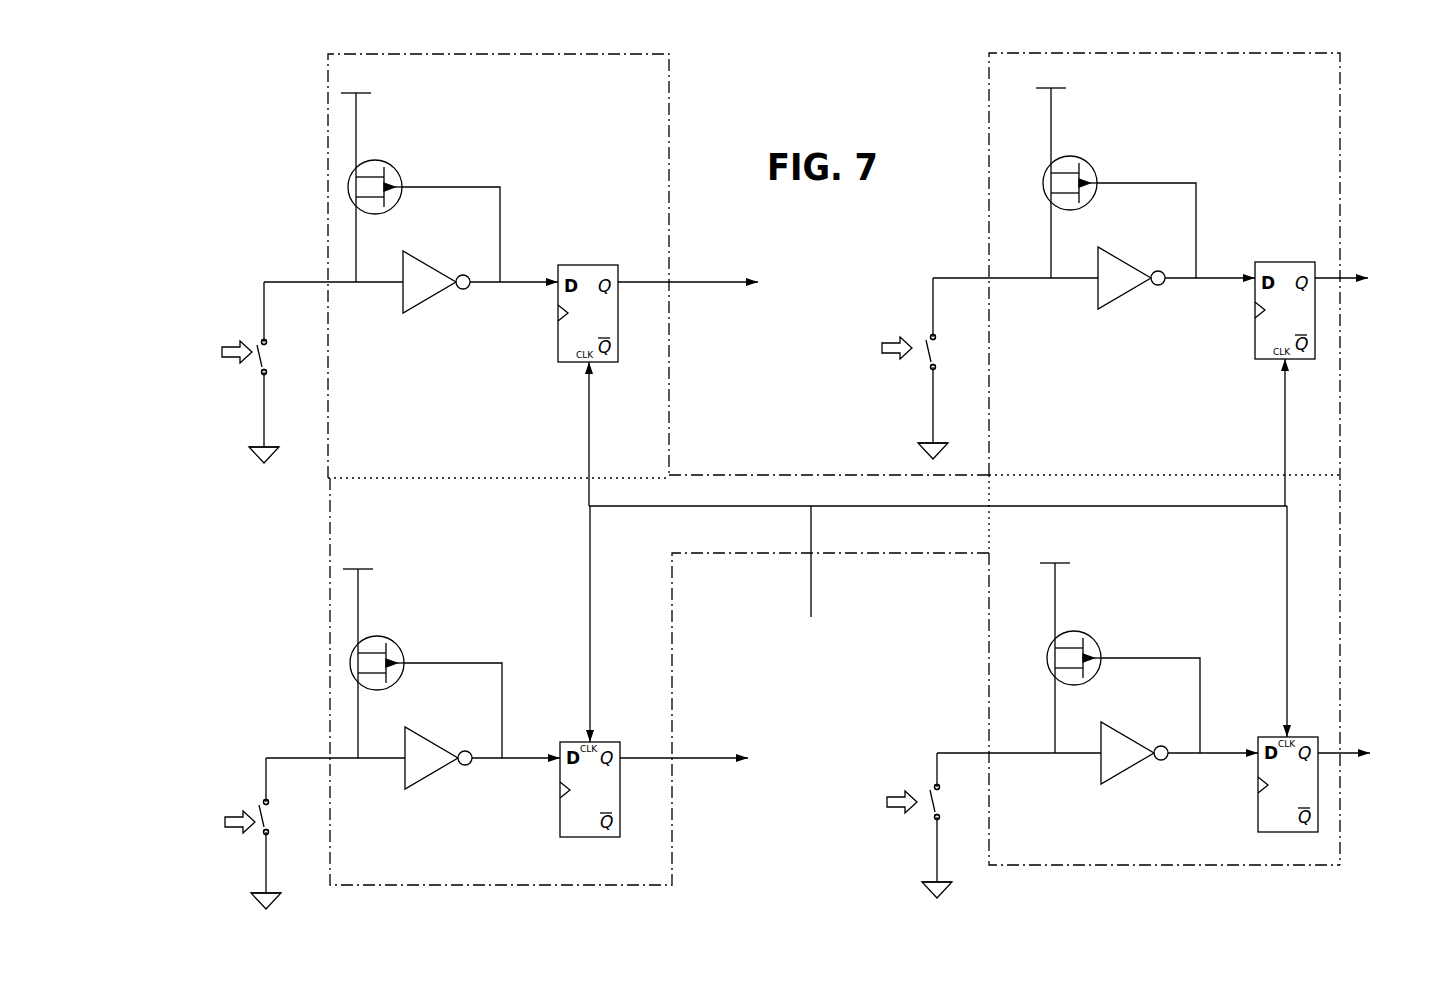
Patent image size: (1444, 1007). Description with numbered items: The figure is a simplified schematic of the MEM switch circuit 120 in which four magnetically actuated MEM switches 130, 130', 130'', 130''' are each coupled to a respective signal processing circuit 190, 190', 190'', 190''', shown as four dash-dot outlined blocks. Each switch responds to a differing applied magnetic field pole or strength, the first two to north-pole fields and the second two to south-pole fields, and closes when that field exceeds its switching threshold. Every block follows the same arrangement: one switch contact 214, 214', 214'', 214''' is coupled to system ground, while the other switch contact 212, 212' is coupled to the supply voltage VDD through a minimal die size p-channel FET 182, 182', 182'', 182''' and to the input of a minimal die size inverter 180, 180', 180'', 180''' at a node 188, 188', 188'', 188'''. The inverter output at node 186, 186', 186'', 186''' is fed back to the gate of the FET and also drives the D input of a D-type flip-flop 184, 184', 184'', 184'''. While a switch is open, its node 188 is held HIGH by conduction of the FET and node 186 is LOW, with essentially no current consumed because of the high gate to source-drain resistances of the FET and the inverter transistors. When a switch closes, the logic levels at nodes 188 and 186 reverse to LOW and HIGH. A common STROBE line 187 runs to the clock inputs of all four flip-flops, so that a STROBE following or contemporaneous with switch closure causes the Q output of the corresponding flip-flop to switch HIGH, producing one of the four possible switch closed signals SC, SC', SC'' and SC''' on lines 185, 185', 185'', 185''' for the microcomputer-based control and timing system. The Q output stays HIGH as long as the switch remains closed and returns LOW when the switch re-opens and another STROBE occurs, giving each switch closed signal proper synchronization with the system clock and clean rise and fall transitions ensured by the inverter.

The MEM switch circuit 120 is at (672, 133).
The MEM switch 130 is at (236, 372).
The MEM switch 130' is at (234, 820).
The MEM switch 130'' is at (899, 368).
The MEM switch 130''' is at (900, 806).
The inverter 180 is at (480, 310).
The inverter 180' is at (482, 778).
The inverter 180'' is at (1176, 304).
The inverter 180''' is at (1179, 772).
The p-channel FET 182 is at (411, 152).
The p-channel FET 182' is at (415, 628).
The p-channel FET 182'' is at (1108, 148).
The p-channel FET 182''' is at (1114, 623).
The D-type flip-flop 184 is at (608, 284).
The D-type flip-flop 184' is at (611, 716).
The D-type flip-flop 184'' is at (1293, 273).
The D-type flip-flop 184''' is at (1230, 799).
The line 185 is at (704, 251).
The line 185' is at (707, 733).
The line 185'' is at (1355, 240).
The line 185''' is at (1368, 725).
The node 186 is at (490, 234).
The node 186' is at (464, 690).
The node 186'' is at (1171, 202).
The node 186''' is at (1171, 679).
The strobe line 187 is at (820, 569).
The node 188 is at (351, 248).
The node 188' is at (356, 729).
The node 188'' is at (1047, 242).
The node 188''' is at (1059, 716).
The signal processing circuit 190 is at (498, 266).
The signal processing circuit 190' is at (659, 681).
The signal processing circuit 190'' is at (1164, 459).
The signal processing circuit 190''' is at (1164, 670).
The switch contact 212 is at (238, 296).
The switch contact 212' is at (330, 824).
The switch contact 214 is at (327, 400).
The switch contact 214' is at (338, 854).
The switch contact 214'' is at (1014, 400).
The switch contact 214''' is at (1011, 808).